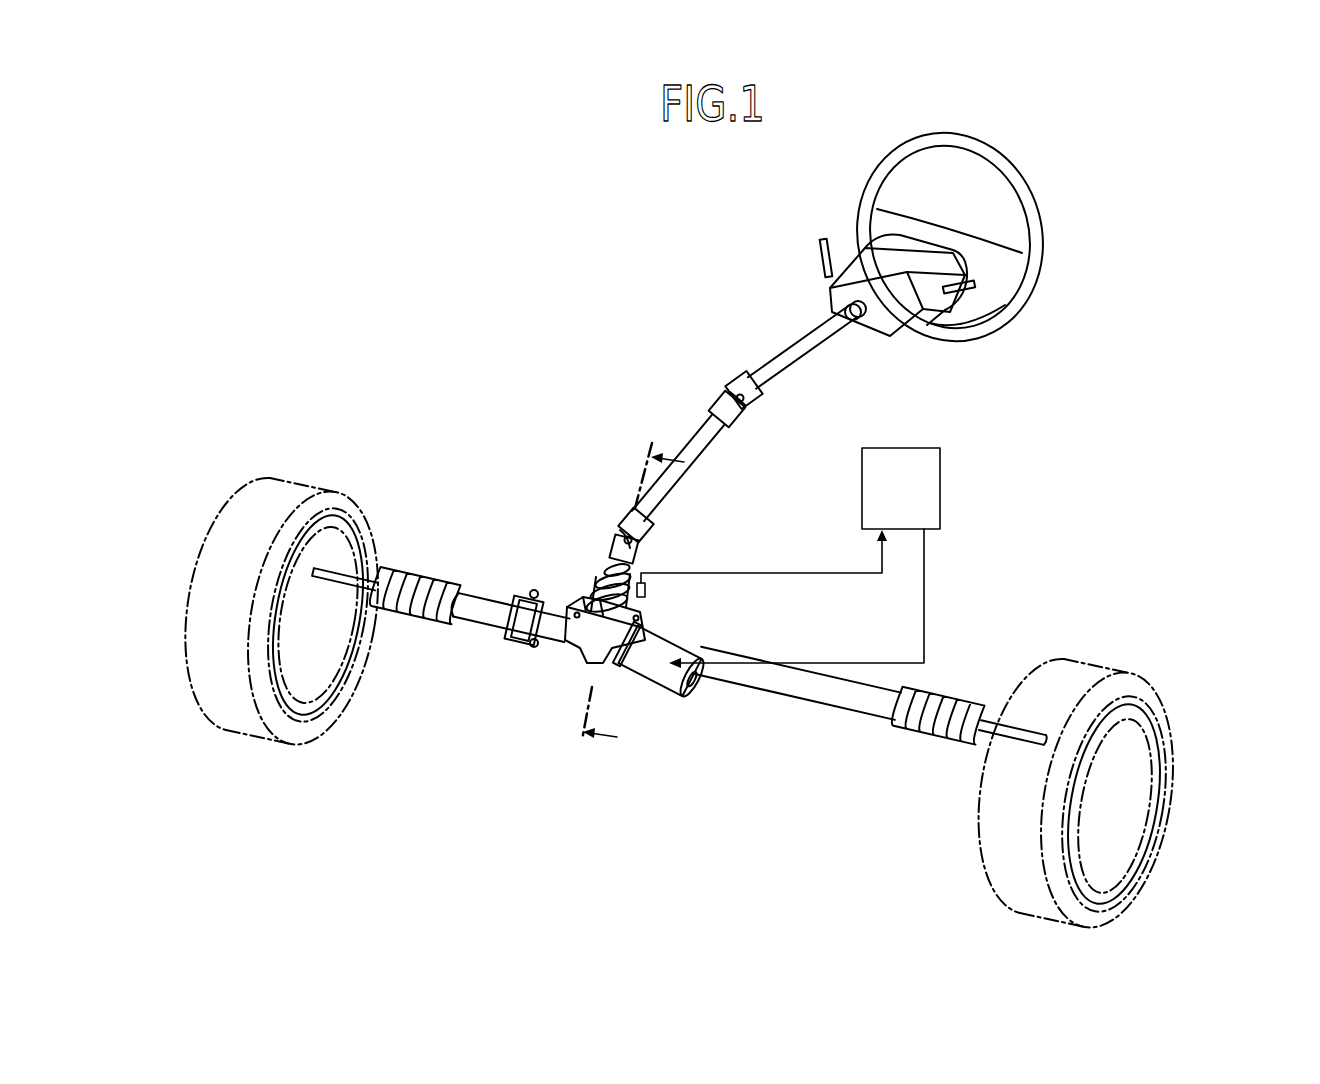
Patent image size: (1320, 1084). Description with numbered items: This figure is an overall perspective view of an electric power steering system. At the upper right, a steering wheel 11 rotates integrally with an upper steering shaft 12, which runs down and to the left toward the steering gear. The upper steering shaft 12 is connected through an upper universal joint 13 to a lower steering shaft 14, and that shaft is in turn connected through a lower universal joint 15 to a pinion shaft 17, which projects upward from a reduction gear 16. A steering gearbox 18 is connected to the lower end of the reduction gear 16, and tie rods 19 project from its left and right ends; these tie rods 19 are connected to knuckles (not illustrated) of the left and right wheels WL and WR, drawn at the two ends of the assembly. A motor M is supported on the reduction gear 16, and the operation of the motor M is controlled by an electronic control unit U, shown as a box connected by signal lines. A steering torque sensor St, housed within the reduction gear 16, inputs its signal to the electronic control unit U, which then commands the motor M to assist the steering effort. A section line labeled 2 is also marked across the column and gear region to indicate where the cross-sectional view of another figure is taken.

The steering wheel 11 is at (1032, 231).
The upper steering shaft 12 is at (788, 352).
The upper universal joint 13 is at (710, 397).
The lower steering shaft 14 is at (700, 448).
The lower universal joint 15 is at (609, 532).
The reduction gear 16 is at (576, 598).
The pinion shaft 17 is at (605, 570).
The steering gearbox 18 is at (559, 644).
The tie rods 19 is at (316, 578).
The section line of FIG. 2 is at (633, 595).
The motor M is at (643, 668).
The steering torque sensor St is at (645, 590).
The electronic control unit U is at (911, 506).
The right wheel WR is at (277, 543).
The left wheel WL is at (1133, 770).